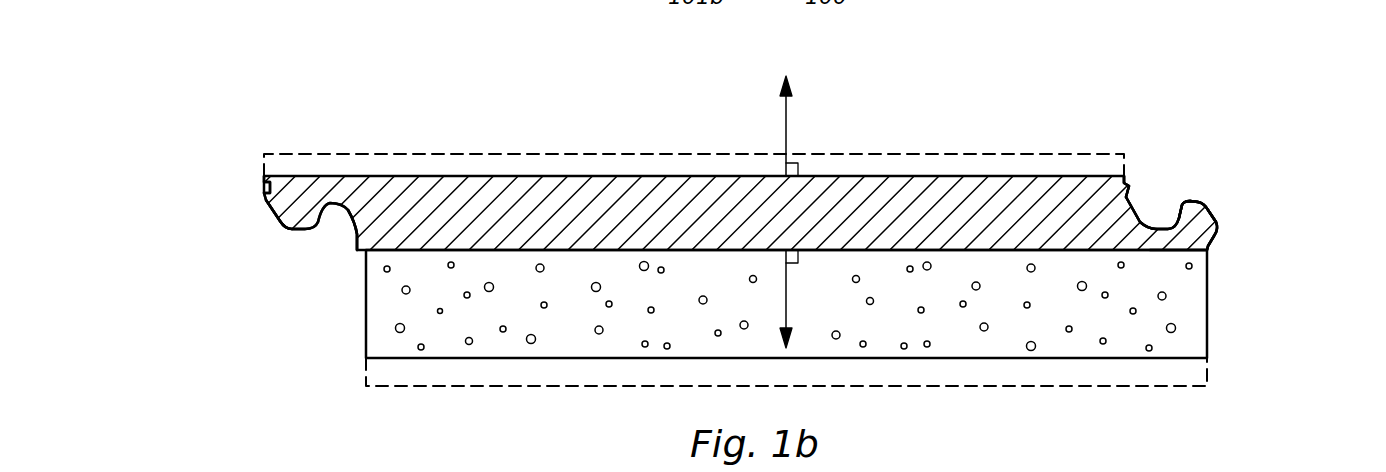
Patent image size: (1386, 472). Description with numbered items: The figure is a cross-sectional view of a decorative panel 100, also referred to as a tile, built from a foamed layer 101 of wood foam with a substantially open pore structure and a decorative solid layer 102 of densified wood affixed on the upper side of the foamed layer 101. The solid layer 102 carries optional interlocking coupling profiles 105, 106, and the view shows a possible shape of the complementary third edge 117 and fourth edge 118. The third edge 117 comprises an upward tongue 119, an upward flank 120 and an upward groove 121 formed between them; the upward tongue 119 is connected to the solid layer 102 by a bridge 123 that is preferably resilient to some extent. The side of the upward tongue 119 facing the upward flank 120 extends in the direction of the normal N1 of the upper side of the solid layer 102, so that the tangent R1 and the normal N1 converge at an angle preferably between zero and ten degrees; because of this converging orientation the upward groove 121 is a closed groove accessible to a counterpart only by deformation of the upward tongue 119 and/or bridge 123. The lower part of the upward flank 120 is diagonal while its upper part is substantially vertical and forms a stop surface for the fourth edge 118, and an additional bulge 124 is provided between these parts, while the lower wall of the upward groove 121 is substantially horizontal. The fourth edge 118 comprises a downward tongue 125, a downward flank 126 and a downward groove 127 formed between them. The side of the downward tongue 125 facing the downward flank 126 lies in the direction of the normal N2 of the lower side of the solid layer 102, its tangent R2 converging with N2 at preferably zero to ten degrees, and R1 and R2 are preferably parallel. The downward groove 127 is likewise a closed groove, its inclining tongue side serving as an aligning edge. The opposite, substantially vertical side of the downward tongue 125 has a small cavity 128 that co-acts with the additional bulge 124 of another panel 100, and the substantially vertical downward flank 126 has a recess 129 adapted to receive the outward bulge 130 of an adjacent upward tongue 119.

The decorative panel 100 is at (923, 125).
The foamed layer 101 is at (565, 318).
The decorative solid layer 102 is at (568, 218).
The interlocking coupling profile 105 is at (260, 240).
The interlocking coupling profile 106 is at (1211, 170).
The third edge 117 is at (1256, 186).
The fourth edge 118 is at (217, 219).
The upward tongue 119 is at (1197, 218).
The upward flank 120 is at (1170, 186).
The upward groove 121 is at (1182, 204).
The bridge 123 is at (1165, 238).
The additional bulge 124 is at (1128, 190).
The downward tongue 125 is at (300, 208).
The downward flank 126 is at (362, 239).
The downward groove 127 is at (335, 217).
The small cavity 128 is at (266, 188).
The recess 129 is at (385, 224).
The outward bulge 130 is at (1217, 229).
The tangent R1 is at (1167, 250).
The tangent R2 is at (321, 222).
The normal of the upper side of the solid layer N1 is at (803, 126).
The normal of the lower side of the solid layer N2 is at (803, 299).